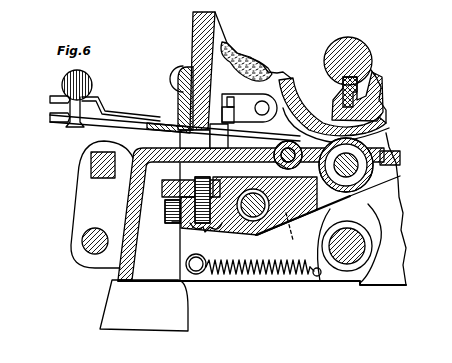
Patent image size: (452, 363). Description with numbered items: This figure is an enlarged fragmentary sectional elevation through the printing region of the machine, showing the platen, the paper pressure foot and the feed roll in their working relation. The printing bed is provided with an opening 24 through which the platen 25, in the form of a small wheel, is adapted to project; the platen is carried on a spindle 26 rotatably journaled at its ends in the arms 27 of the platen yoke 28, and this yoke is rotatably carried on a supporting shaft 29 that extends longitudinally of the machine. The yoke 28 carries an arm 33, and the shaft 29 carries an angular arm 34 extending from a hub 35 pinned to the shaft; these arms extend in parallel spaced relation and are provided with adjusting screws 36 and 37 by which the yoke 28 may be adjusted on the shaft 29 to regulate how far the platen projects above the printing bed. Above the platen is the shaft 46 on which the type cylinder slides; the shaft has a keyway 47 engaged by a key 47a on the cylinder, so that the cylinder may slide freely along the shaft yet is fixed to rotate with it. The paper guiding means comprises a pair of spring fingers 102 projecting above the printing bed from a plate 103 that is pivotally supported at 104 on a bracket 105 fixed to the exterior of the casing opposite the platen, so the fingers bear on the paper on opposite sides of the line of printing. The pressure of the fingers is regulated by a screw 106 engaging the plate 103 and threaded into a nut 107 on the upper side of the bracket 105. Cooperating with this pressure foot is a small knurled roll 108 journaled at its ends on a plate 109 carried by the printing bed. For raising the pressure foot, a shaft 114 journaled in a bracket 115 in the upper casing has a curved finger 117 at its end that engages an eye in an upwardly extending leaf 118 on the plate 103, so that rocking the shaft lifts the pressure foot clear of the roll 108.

The opening 24 is at (398, 170).
The platen 25 is at (375, 188).
The spindle 26 is at (374, 167).
The arms 27 is at (335, 199).
The platen yoke 28 is at (297, 212).
The supporting shaft 29 is at (272, 228).
The arm 33 is at (168, 222).
The angular arm 34 is at (164, 221).
The hub 35 is at (330, 214).
The adjusting screw 36 is at (207, 229).
The adjusting screw 37 is at (176, 227).
The shaft 46 is at (370, 48).
The keyway 47 is at (370, 70).
The key 47a is at (360, 98).
The spring fingers 102 is at (265, 140).
The plate 103 is at (90, 127).
The pivot 104 is at (169, 122).
The bracket 105 is at (102, 109).
The screw 106 is at (65, 111).
The nut 107 is at (62, 84).
The knurled roll 108 is at (278, 166).
The plate 109 is at (191, 193).
The shaft 114 is at (283, 83).
The bracket 115 is at (241, 95).
The curved finger 117 is at (250, 106).
The leaf 118 is at (230, 97).